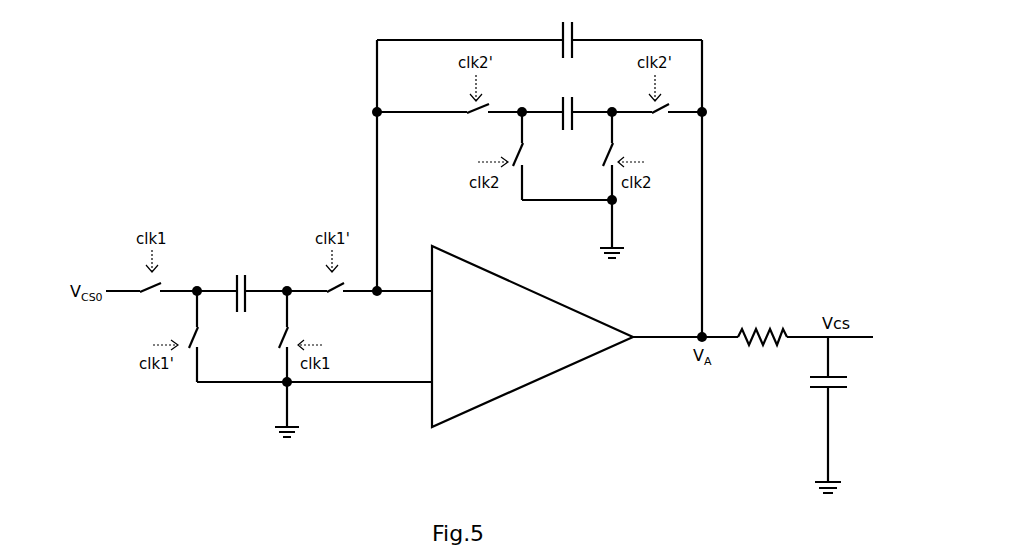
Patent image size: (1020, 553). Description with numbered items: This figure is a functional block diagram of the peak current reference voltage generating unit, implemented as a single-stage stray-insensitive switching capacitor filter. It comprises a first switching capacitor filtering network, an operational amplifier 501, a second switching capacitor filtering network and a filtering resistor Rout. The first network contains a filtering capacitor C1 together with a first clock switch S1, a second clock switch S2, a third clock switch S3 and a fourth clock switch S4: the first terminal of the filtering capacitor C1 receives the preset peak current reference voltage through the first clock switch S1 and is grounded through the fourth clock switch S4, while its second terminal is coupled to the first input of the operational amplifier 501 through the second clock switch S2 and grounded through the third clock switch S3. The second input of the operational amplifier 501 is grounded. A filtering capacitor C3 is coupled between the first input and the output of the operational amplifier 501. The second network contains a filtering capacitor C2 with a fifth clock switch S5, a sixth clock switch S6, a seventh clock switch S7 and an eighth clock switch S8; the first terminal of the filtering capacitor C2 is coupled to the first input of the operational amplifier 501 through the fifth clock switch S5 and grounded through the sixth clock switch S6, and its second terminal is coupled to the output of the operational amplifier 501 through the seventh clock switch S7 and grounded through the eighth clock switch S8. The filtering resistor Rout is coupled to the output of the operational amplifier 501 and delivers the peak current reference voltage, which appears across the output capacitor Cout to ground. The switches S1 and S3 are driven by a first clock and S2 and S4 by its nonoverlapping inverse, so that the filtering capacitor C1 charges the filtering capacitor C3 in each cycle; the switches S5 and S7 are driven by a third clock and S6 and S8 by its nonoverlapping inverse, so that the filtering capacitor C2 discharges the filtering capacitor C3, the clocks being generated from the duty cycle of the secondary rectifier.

The operational amplifier 501 is at (522, 375).
The first clock switch S1 is at (150, 301).
The second clock switch S2 is at (332, 301).
The third clock switch S3 is at (272, 334).
The fourth clock switch S4 is at (207, 334).
The fifth clock switch S5 is at (477, 124).
The sixth clock switch S6 is at (528, 153).
The seventh clock switch S7 is at (658, 124).
The eighth clock switch S8 is at (598, 153).
The filtering capacitor C1 is at (240, 283).
The filtering capacitor C2 is at (564, 104).
The filtering capacitor C3 is at (564, 30).
The filtering resistor Rout is at (762, 327).
The output capacitor Cout is at (816, 393).